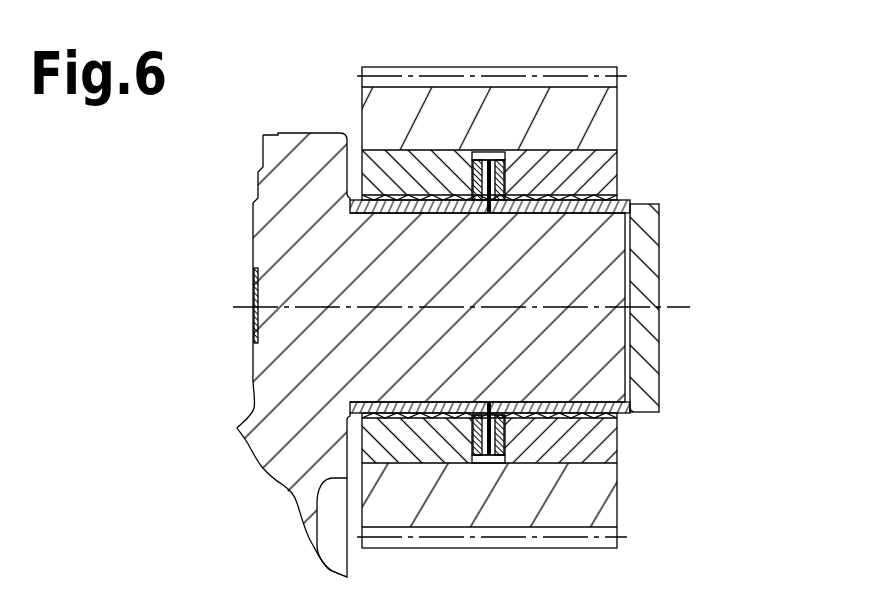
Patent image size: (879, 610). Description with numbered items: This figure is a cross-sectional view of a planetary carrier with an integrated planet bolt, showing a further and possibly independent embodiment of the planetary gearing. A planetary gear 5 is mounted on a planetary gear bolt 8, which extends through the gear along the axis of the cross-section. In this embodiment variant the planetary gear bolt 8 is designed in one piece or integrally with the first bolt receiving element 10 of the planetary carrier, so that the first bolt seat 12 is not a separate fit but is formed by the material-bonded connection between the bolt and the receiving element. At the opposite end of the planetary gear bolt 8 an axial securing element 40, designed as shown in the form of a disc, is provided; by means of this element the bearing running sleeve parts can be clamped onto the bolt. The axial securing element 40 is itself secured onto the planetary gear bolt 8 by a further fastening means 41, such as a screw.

The planetary gear 5 is at (570, 122).
The planetary gear bolt 8 is at (600, 262).
The first bolt receiving element 10 is at (278, 148).
The first bolt seat 12 is at (222, 249).
The axial securing element 40 is at (645, 250).
The further fastening means 41 is at (676, 310).